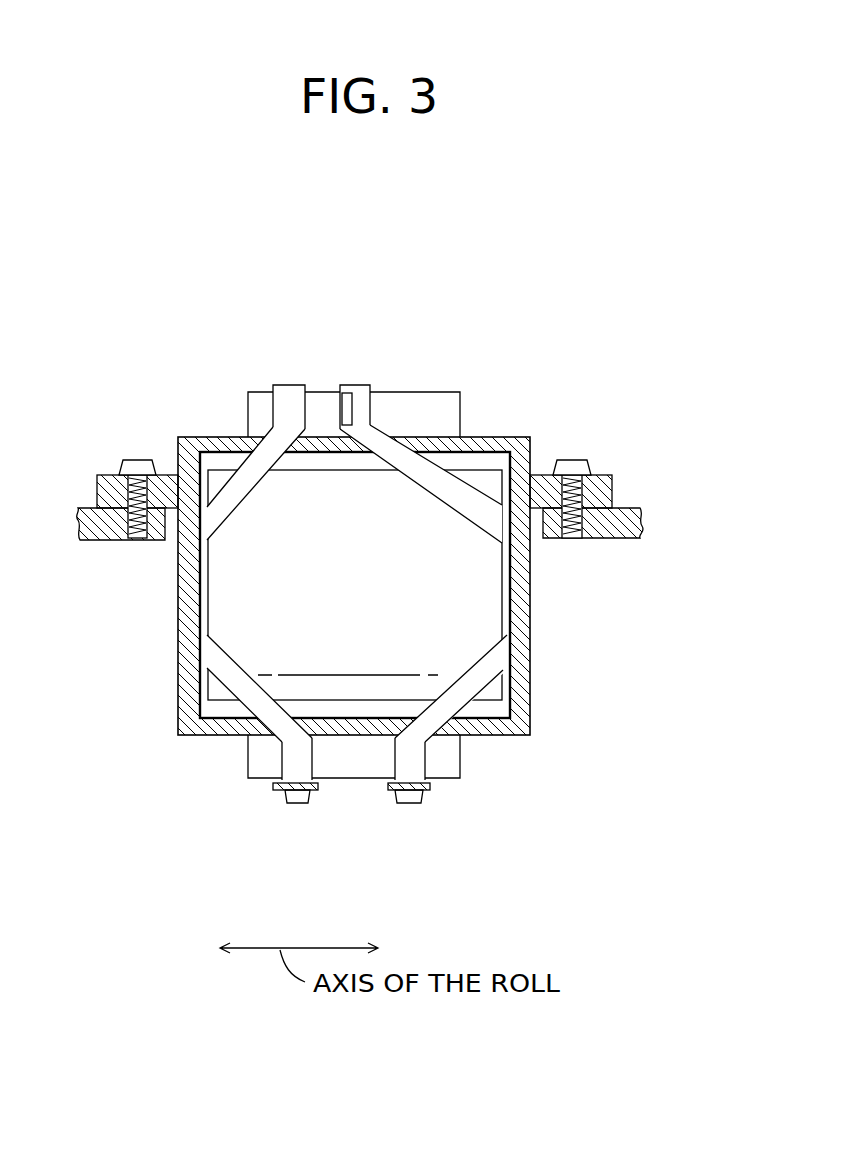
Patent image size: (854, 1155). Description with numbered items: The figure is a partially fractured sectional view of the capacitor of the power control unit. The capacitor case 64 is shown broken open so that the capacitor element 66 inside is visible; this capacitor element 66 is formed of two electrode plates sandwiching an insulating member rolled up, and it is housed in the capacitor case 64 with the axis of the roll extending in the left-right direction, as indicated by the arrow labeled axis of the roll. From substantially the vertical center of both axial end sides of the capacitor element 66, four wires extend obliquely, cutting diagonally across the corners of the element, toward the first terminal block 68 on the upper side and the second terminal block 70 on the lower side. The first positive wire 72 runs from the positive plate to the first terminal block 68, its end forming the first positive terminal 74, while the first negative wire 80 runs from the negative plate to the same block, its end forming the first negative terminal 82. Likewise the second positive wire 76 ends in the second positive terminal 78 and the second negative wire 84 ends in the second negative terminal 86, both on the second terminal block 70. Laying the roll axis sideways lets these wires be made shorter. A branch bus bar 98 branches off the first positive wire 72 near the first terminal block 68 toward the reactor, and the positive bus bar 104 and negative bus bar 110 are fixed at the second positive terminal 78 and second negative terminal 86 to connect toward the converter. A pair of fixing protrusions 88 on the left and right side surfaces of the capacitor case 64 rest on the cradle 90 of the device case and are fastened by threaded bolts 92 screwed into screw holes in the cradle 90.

The capacitor case 64 is at (522, 619).
The capacitor element 66 is at (478, 578).
The first terminal block 68 is at (447, 397).
The second terminal block 70 is at (357, 766).
The first positive wire 72 is at (468, 500).
The first positive terminal 74 is at (361, 387).
The second positive wire 76 is at (470, 682).
The second positive terminal 78 is at (408, 770).
The first negative wire 80 is at (236, 490).
The first negative terminal 82 is at (286, 385).
The second negative wire 84 is at (222, 684).
The second negative terminal 86 is at (298, 780).
The fixing protrusion 88 is at (104, 480).
The cradle 90 is at (108, 540).
The threaded bolt 92 is at (135, 458).
The branch bus bar 98 is at (320, 388).
The positive bus bar 104 is at (418, 790).
The negative bus bar 110 is at (275, 788).